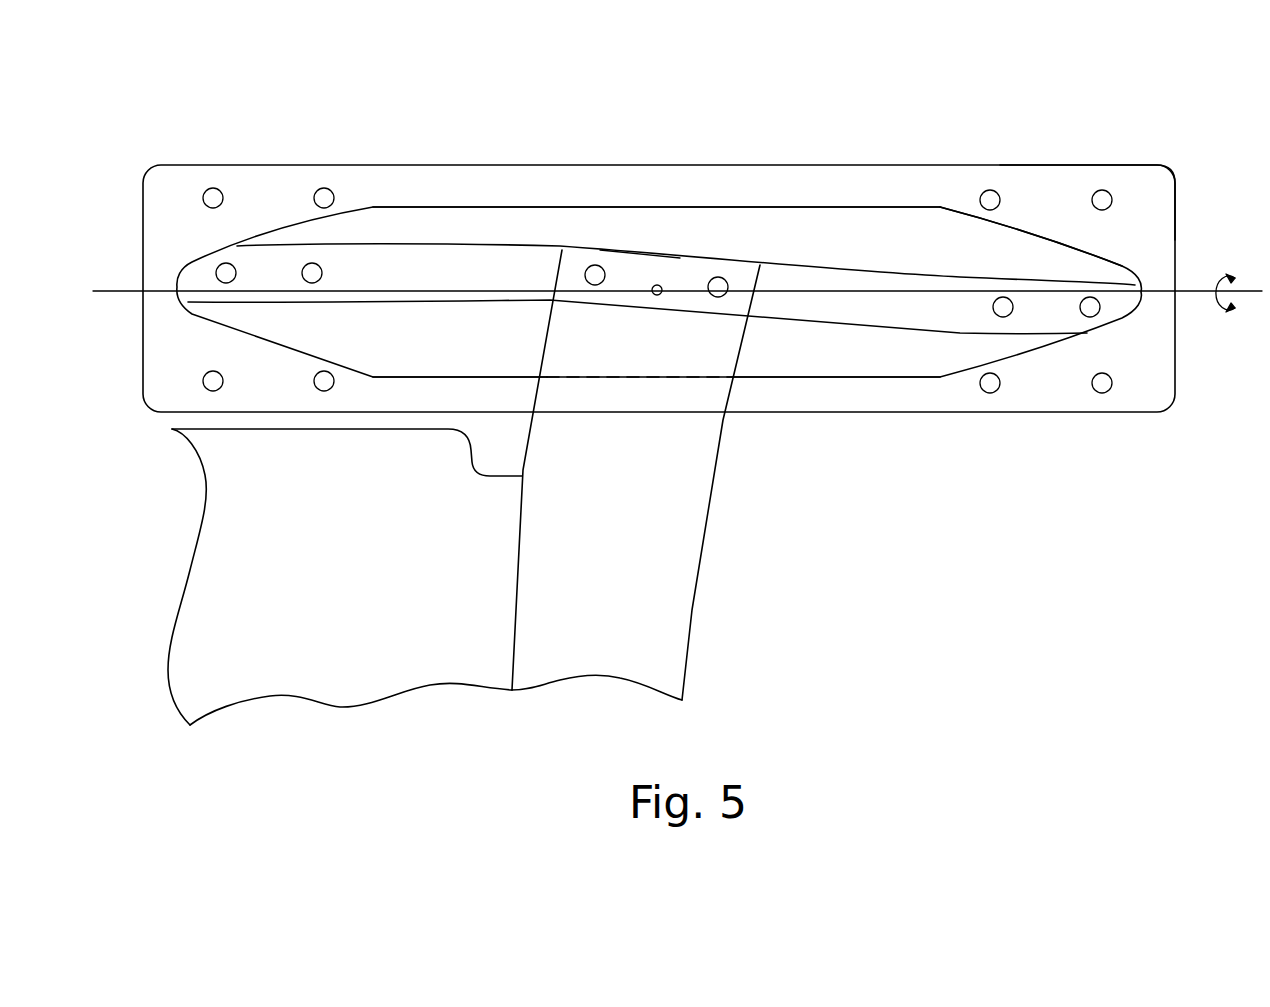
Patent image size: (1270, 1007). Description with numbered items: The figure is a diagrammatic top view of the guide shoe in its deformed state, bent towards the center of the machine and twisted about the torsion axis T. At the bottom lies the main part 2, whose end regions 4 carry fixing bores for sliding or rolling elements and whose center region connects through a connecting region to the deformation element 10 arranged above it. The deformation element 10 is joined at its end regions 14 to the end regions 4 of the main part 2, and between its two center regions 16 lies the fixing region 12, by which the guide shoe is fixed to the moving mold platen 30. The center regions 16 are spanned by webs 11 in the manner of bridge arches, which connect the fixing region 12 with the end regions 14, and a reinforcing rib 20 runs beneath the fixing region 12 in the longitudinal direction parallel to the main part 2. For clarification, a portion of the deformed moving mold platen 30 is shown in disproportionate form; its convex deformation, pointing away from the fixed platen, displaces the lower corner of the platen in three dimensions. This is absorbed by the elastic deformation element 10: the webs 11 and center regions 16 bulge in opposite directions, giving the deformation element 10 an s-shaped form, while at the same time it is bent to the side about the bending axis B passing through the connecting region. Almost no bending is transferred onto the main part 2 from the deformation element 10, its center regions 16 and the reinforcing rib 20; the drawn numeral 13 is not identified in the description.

The main part 2 is at (805, 165).
The end regions of the main part 4 is at (1068, 203).
The deformation element 10 is at (400, 240).
The webs 11 is at (965, 282).
The fixing region 12 is at (632, 263).
The locating hole 13 is at (590, 258).
The end regions of the deformation element 14 is at (270, 270).
The center regions of the deformation element 16 is at (448, 214).
The reinforcing rib 20 is at (905, 232).
The moving mold platen 30 is at (665, 597).
The bending axis B is at (103, 290).
The torsion axis T is at (657, 283).